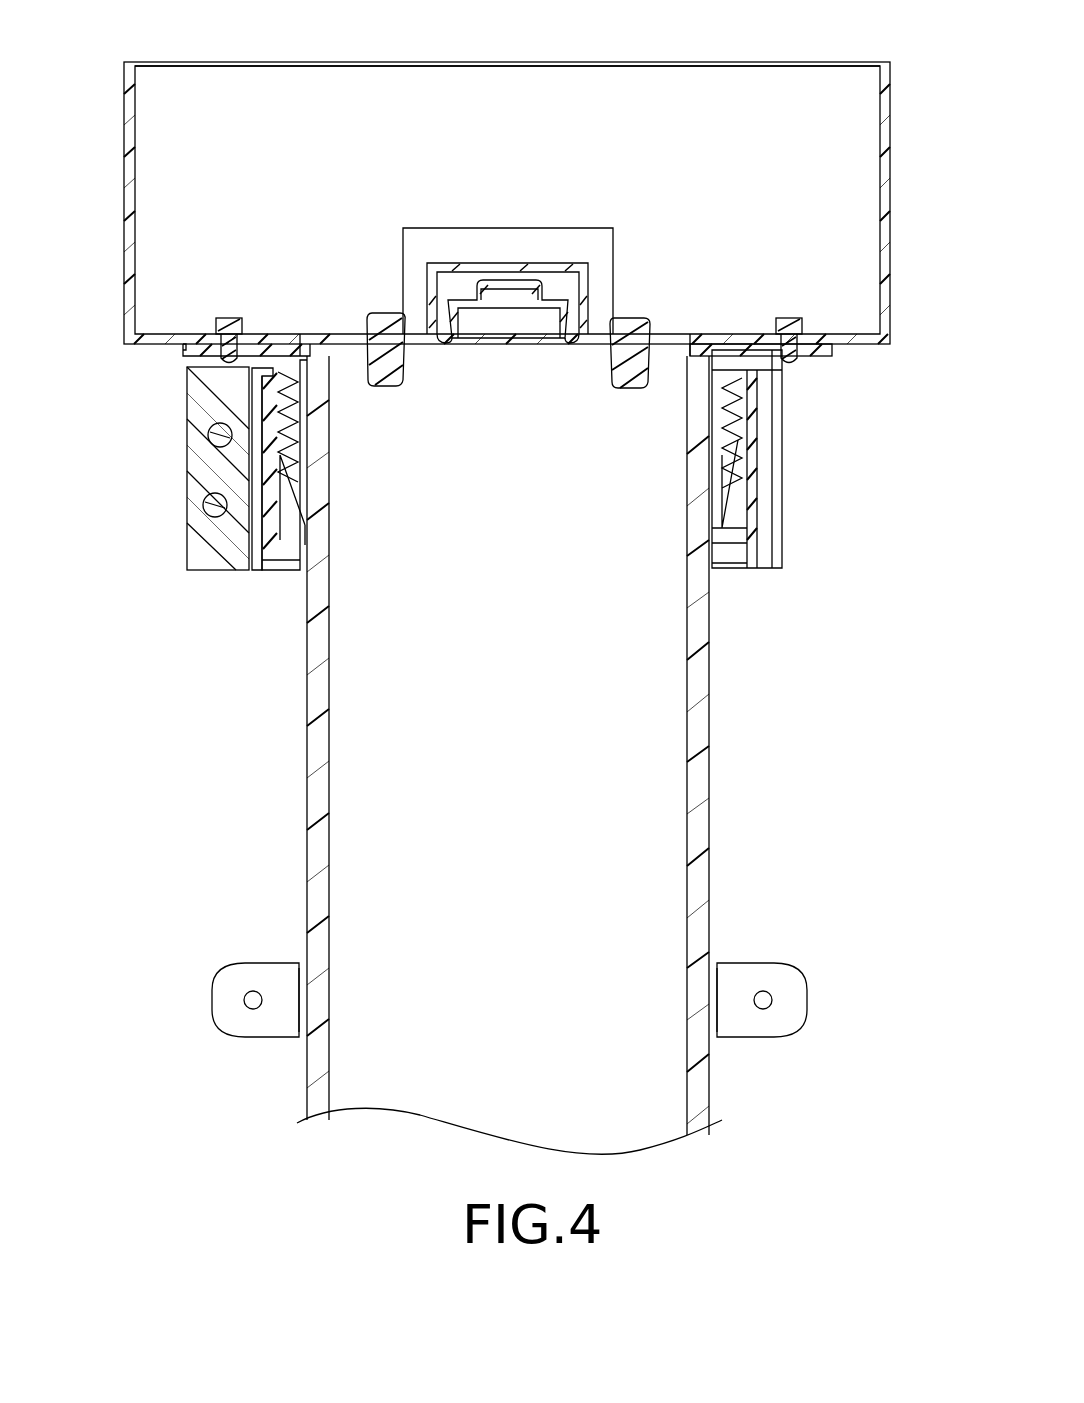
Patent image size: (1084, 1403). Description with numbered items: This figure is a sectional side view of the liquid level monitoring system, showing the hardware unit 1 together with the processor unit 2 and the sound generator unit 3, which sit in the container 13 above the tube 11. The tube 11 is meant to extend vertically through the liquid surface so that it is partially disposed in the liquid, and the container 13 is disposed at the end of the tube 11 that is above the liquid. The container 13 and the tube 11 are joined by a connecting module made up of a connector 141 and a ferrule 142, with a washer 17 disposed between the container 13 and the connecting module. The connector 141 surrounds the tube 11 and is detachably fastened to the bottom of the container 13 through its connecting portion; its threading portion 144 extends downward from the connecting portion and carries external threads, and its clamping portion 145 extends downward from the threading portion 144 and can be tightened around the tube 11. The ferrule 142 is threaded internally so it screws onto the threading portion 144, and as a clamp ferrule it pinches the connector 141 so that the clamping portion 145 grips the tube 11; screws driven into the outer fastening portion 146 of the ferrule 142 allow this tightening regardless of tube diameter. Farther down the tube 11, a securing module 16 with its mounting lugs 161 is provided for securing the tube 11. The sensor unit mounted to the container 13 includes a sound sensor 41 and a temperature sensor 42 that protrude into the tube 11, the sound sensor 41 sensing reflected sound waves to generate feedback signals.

The hardware unit 1 is at (722, 716).
The tube 11 is at (709, 823).
The container 13 is at (893, 132).
The securing module 16 is at (790, 963).
The mounting hole 161 is at (232, 1018).
The washer 17 is at (313, 342).
The connector 141 is at (183, 352).
The ferrule 142 is at (755, 456).
The threading portion 144 is at (300, 430).
The clamping portion 145 is at (303, 476).
The fastening portion 146 is at (183, 537).
The processor unit 2 is at (540, 222).
The sound generator unit 3 is at (552, 292).
The sound sensor 41 is at (652, 372).
The temperature sensor 42 is at (368, 365).